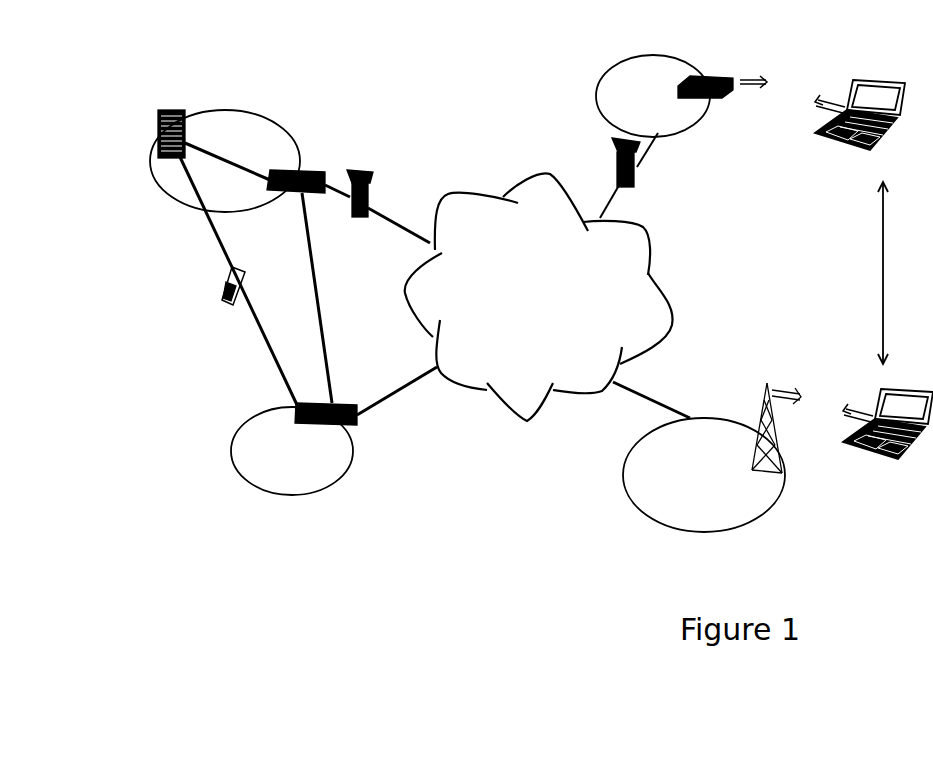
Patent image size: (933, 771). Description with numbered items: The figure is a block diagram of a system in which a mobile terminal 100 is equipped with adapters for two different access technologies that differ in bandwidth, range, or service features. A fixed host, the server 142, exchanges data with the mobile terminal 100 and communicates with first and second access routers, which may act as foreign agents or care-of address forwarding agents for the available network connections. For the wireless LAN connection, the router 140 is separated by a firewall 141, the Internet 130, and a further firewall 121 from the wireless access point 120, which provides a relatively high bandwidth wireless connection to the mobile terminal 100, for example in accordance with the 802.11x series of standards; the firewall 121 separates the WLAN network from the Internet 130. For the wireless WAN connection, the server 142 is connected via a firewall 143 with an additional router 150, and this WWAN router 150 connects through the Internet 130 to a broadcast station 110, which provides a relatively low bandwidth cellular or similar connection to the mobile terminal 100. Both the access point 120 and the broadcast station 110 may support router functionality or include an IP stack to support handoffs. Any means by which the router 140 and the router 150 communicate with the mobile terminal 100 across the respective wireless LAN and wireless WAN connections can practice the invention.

The mobile terminal 100 is at (852, 400).
The broadcast station 110 is at (752, 390).
The access point 120 is at (722, 63).
The firewall 121 is at (603, 158).
The Internet 130 is at (541, 268).
The router 140 is at (283, 172).
The firewall 141 is at (356, 170).
The server 142 is at (180, 107).
The firewall 143 is at (245, 256).
The router 150 is at (310, 403).